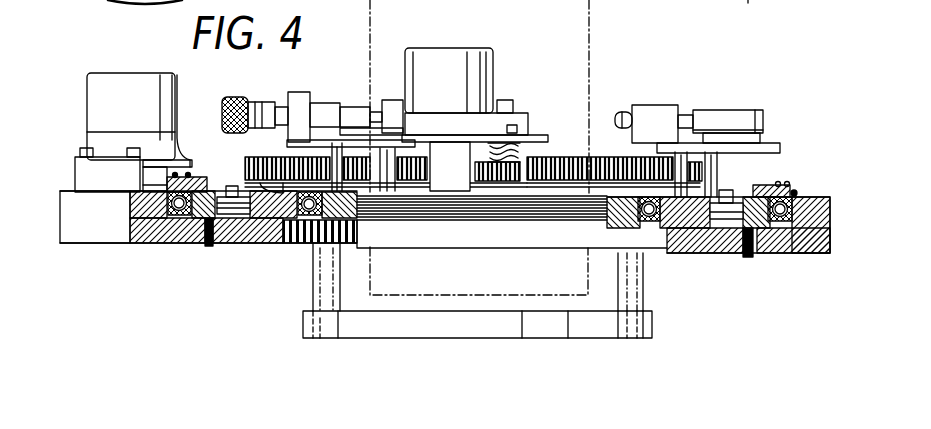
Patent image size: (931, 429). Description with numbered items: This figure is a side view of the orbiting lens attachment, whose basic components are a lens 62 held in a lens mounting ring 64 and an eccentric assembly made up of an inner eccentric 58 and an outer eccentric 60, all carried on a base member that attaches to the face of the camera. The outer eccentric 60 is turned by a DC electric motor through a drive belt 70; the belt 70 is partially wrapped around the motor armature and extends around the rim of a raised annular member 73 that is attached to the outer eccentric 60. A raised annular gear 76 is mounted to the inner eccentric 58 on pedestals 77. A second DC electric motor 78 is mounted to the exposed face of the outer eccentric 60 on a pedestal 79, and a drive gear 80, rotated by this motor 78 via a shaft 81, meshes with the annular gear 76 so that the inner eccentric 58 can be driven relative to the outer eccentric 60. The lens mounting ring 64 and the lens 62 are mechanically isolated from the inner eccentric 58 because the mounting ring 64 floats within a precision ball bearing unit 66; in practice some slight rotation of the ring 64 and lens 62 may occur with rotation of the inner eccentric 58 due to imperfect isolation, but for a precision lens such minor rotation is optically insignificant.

The inner eccentric ring member 58 is at (290, 196).
The outer eccentric ring member 60 is at (208, 204).
The lens 62 is at (591, 44).
The lens mounting ring 64 is at (352, 222).
The precision ball bearing unit 66 is at (652, 208).
The drive belt 70 is at (170, 188).
The raised annular member 73 is at (207, 178).
The raised annular gear 76 is at (568, 158).
The pedestals 77 is at (306, 225).
The second motor 78 is at (448, 47).
The pedestal 79 is at (457, 174).
The drive gear 80 is at (504, 176).
The shaft 81 is at (513, 107).